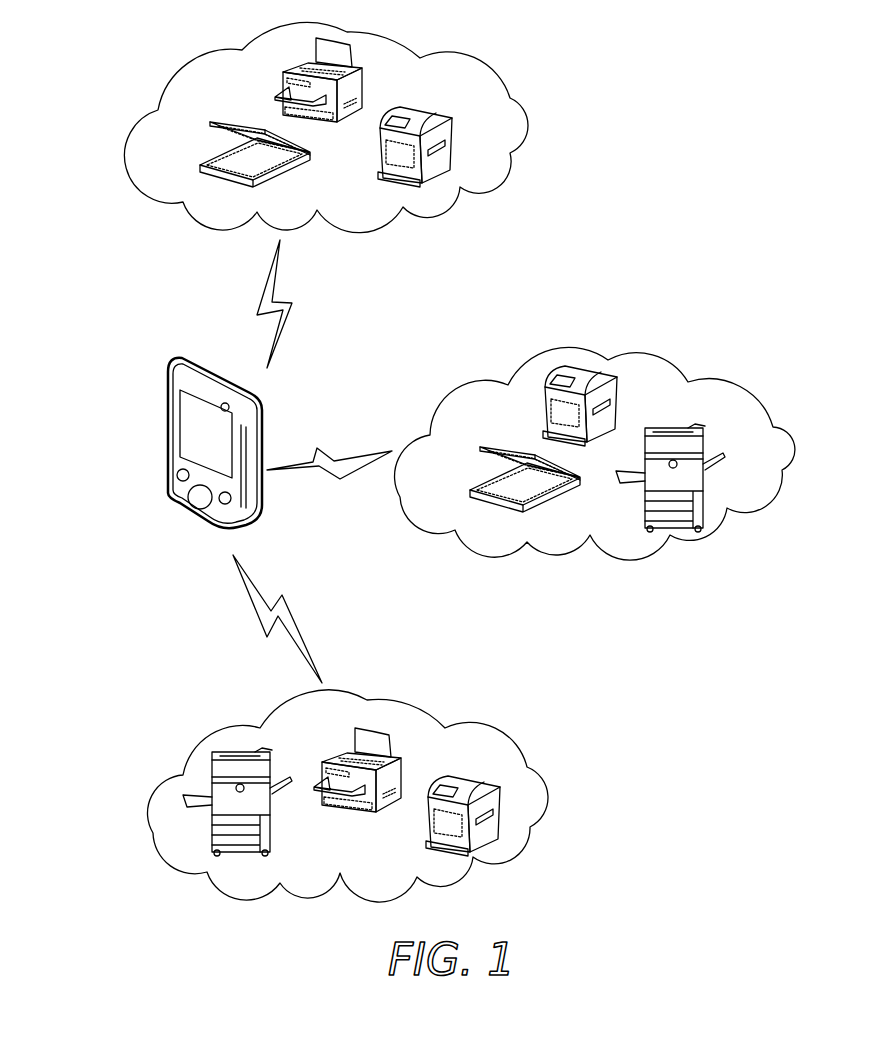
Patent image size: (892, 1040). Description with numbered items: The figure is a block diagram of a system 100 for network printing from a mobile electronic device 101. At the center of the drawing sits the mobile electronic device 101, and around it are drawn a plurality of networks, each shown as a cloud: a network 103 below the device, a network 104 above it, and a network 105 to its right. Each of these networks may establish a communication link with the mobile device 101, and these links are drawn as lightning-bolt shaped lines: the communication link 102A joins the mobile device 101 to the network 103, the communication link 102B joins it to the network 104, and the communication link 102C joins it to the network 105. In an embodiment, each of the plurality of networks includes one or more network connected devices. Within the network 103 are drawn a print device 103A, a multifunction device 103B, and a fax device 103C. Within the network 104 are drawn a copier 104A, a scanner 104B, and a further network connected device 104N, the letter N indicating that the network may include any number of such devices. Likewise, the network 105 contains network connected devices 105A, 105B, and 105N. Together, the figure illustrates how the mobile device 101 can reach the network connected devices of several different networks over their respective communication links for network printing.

The system 100 is at (612, 170).
The mobile electronic device 101 is at (167, 398).
The communication link 102A is at (287, 601).
The communication link 102B is at (318, 482).
The communication link 102C is at (297, 307).
The network 103 is at (388, 698).
The print device 103A is at (318, 757).
The multifunction device 103B is at (430, 833).
The fax device 103C is at (272, 836).
The network 104 is at (173, 73).
The copier 104A is at (363, 92).
The scanner 104B is at (283, 175).
The network connected device 104N is at (453, 138).
The network 105 is at (653, 356).
The network connected device 105A is at (550, 500).
The network connected device 105B is at (707, 480).
The network connected device 105N is at (627, 407).